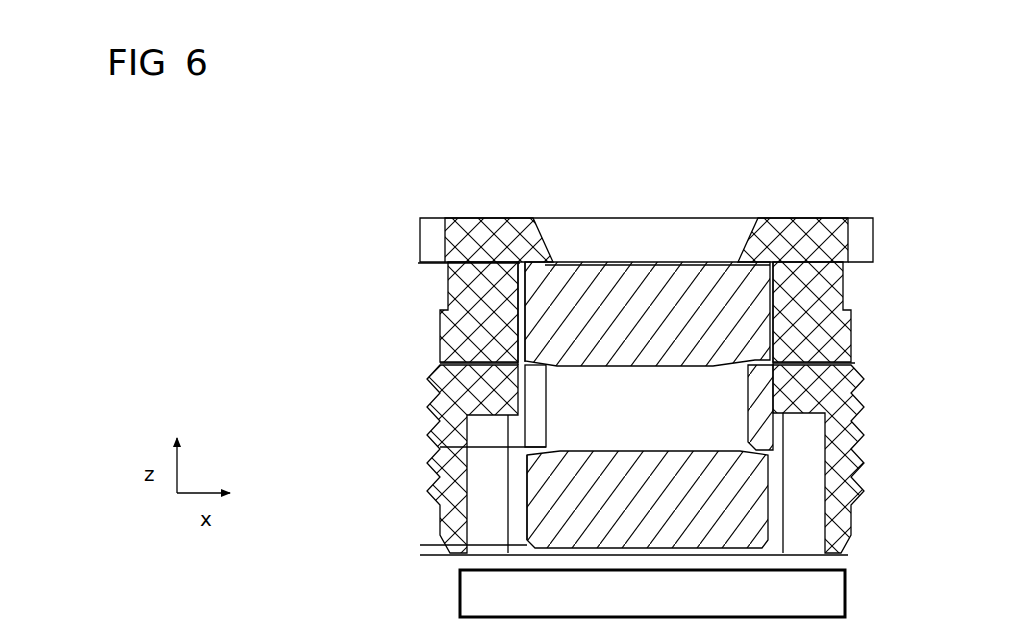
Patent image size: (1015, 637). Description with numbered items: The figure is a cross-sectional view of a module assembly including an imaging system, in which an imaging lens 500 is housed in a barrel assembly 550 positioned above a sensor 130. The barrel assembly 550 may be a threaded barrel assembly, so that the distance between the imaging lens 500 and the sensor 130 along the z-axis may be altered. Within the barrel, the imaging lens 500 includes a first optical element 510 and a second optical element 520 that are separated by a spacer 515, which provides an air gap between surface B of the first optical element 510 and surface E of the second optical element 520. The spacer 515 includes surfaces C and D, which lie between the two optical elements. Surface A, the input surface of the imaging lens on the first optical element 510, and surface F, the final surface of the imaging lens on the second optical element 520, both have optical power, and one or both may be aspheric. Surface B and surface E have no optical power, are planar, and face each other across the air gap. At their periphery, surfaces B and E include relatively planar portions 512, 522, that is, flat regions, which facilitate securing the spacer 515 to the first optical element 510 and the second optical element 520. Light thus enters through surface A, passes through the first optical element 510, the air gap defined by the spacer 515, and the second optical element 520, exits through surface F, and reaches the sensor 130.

The imaging lens 500 is at (357, 250).
The barrel assembly 550 is at (797, 236).
The first optical element 510 is at (556, 311).
The planar portion 512 is at (519, 361).
The spacer 515 is at (533, 397).
The planar portion 522 is at (531, 455).
The second optical element 520 is at (557, 493).
The sensor 130 is at (459, 592).
The surface A is at (770, 262).
The surface B is at (770, 357).
The surface C is at (776, 362).
The surface D is at (772, 455).
The surface E is at (775, 457).
The surface F is at (770, 543).